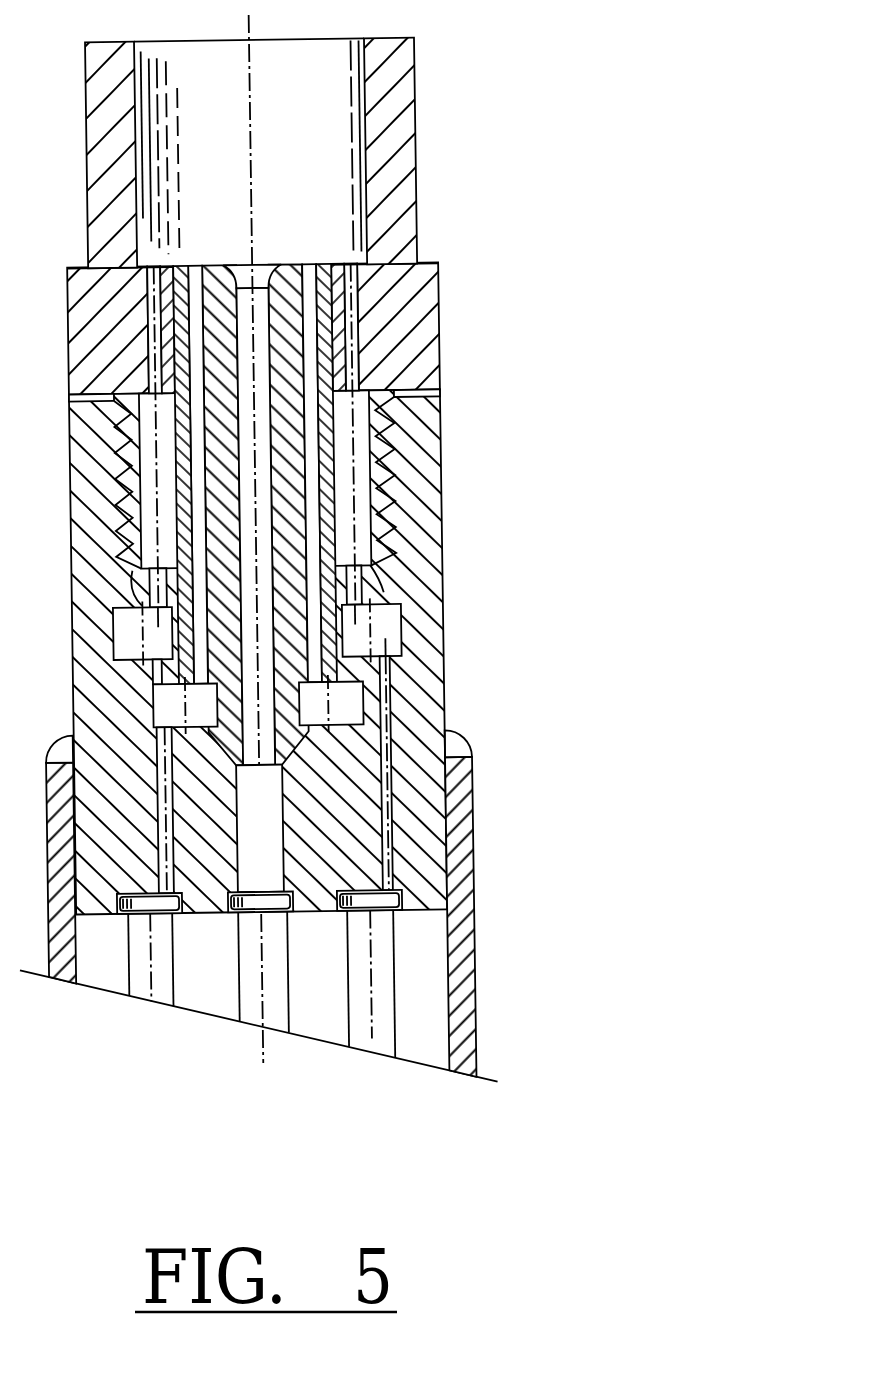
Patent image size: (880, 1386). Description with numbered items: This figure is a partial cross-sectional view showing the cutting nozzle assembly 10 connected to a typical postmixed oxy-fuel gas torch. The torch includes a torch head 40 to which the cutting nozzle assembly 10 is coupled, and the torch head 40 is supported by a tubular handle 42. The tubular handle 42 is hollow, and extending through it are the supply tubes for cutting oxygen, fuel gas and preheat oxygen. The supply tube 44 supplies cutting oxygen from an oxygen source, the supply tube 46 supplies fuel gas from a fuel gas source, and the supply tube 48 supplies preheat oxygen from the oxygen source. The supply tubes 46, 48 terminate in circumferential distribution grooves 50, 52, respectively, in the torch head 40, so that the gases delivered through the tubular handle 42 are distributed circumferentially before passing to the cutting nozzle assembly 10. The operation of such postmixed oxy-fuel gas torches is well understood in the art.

The cutting nozzle assembly 10 is at (482, 138).
The torch head 40 is at (430, 513).
The tubular handle 42 is at (465, 951).
The supply tube 44 is at (250, 1015).
The supply tube 46 is at (365, 1040).
The supply tube 48 is at (140, 990).
The circumferential distribution groove 50 is at (353, 705).
The circumferential distribution groove 52 is at (390, 625).